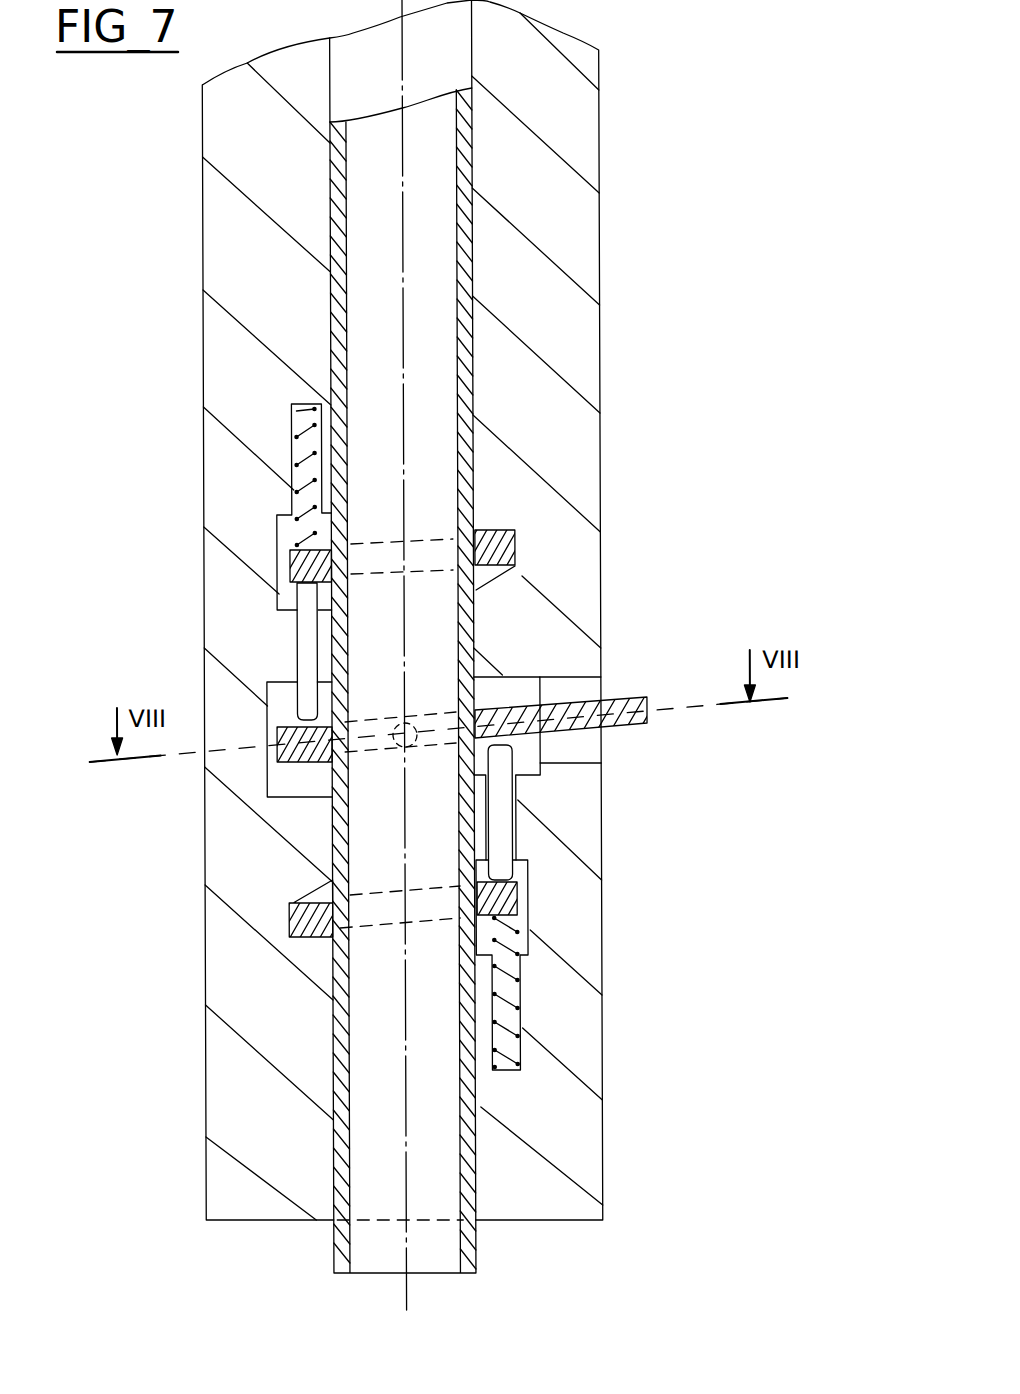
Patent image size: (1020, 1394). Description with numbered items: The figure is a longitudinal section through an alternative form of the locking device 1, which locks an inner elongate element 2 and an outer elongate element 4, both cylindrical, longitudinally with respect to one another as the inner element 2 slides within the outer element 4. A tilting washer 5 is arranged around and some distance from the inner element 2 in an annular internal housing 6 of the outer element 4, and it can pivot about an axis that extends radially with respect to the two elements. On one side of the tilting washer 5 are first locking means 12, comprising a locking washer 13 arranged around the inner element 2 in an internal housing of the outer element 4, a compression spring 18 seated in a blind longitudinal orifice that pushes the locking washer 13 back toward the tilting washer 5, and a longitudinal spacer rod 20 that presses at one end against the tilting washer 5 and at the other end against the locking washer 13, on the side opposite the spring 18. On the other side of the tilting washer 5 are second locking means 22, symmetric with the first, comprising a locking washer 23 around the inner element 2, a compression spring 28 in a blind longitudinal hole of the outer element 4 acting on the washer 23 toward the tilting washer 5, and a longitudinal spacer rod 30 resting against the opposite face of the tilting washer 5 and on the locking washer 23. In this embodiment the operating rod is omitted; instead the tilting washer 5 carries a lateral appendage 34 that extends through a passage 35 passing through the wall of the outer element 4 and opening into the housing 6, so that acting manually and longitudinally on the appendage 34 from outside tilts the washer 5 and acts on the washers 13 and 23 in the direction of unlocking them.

The locking device 1 is at (522, 591).
The inner elongate element 2 is at (472, 240).
The outer elongate element 4 is at (570, 342).
The tilting washer 5 is at (276, 730).
The annular internal housing 6 is at (278, 780).
The first locking means 12 is at (551, 975).
The locking washer 13 is at (513, 893).
The compression spring 18 is at (500, 1030).
The longitudinal spacer rod 20 is at (497, 836).
The second locking means 22 is at (258, 501).
The locking washer 23 is at (288, 554).
The compression spring 28 is at (290, 457).
The longitudinal spacer rod 30 is at (300, 640).
The lateral appendage 34 is at (624, 715).
The passage 35 is at (565, 690).